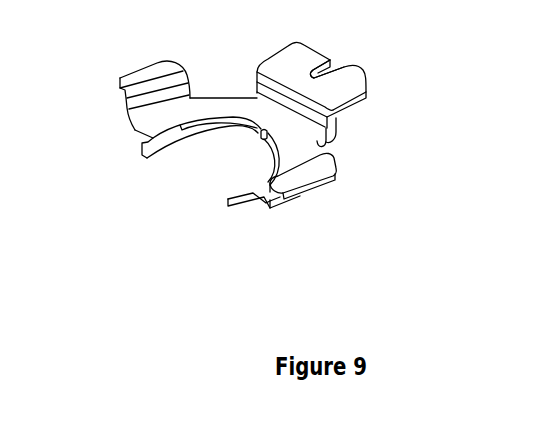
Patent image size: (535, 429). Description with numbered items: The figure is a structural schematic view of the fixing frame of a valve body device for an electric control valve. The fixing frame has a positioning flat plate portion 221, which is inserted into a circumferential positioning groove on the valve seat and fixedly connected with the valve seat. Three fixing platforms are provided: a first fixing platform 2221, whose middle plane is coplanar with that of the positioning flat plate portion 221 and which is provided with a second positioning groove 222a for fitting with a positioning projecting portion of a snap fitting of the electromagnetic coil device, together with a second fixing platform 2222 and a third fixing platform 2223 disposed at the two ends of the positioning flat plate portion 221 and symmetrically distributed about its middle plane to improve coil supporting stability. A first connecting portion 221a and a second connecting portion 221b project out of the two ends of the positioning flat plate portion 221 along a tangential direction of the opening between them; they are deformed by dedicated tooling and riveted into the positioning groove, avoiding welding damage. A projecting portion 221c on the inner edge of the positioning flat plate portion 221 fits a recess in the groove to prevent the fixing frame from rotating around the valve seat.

The third fixing platform 2223 is at (121, 91).
The first fixing platform 2221 is at (352, 82).
The second positioning groove 222a is at (330, 63).
The second fixing platform 2222 is at (325, 165).
The positioning flat plate portion 221 is at (253, 118).
The first connecting portion 221a is at (228, 200).
The second connecting portion 221b is at (148, 150).
The projecting portion 221c is at (260, 136).